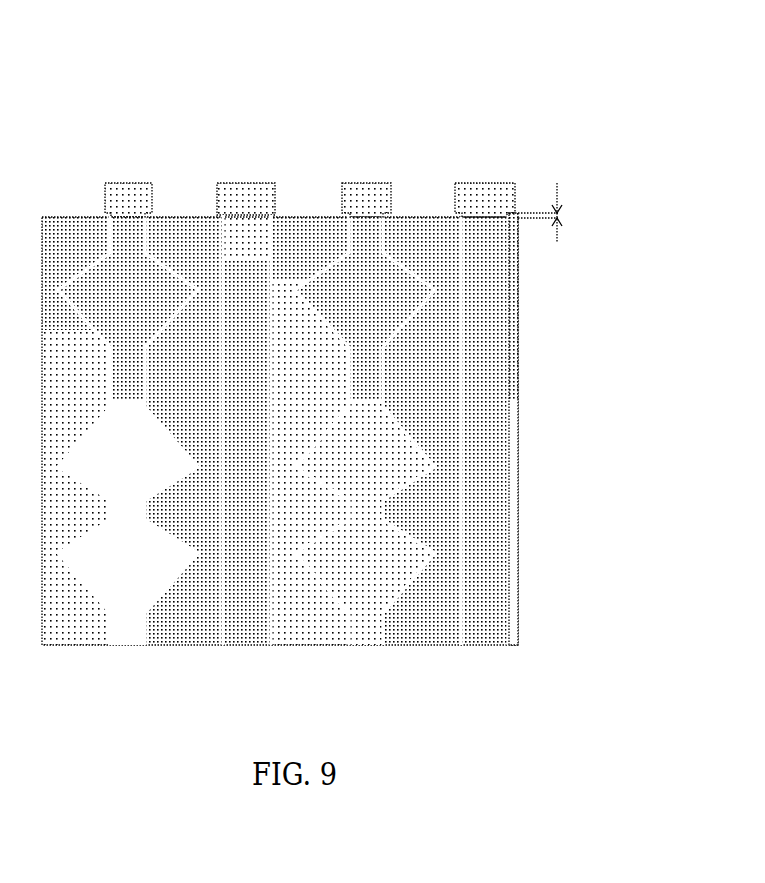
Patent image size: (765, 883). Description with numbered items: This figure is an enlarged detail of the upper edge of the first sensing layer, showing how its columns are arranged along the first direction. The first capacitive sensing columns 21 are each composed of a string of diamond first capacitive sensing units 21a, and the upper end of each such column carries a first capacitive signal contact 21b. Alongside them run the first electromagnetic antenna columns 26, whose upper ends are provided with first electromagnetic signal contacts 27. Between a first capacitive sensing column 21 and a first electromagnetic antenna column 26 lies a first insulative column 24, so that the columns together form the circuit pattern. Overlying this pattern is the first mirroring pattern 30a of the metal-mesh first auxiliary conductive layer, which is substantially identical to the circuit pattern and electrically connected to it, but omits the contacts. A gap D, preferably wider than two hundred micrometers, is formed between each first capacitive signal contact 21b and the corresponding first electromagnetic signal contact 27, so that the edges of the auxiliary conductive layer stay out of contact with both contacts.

The first capacitive sensing column 21 is at (128, 153).
The first capacitive sensing unit 21a is at (405, 552).
The first capacitive signal contact 21b is at (113, 192).
The first insulative column 24 is at (309, 237).
The first electromagnetic antenna column 26 is at (243, 153).
The first electromagnetic signal contact 27 is at (230, 193).
The first mirroring pattern 30a is at (515, 307).
The gap D is at (558, 216).